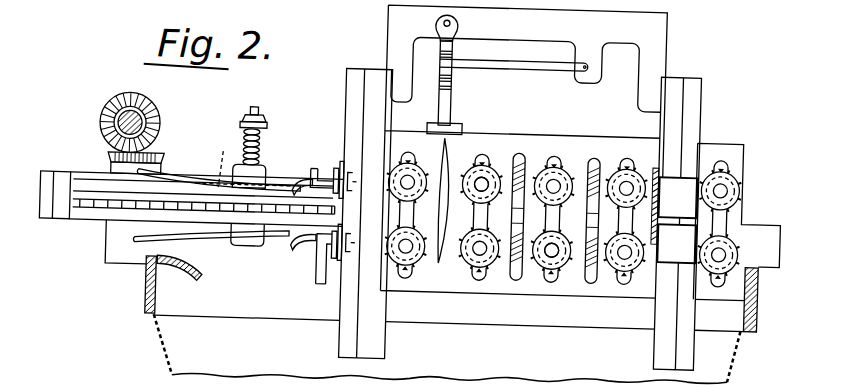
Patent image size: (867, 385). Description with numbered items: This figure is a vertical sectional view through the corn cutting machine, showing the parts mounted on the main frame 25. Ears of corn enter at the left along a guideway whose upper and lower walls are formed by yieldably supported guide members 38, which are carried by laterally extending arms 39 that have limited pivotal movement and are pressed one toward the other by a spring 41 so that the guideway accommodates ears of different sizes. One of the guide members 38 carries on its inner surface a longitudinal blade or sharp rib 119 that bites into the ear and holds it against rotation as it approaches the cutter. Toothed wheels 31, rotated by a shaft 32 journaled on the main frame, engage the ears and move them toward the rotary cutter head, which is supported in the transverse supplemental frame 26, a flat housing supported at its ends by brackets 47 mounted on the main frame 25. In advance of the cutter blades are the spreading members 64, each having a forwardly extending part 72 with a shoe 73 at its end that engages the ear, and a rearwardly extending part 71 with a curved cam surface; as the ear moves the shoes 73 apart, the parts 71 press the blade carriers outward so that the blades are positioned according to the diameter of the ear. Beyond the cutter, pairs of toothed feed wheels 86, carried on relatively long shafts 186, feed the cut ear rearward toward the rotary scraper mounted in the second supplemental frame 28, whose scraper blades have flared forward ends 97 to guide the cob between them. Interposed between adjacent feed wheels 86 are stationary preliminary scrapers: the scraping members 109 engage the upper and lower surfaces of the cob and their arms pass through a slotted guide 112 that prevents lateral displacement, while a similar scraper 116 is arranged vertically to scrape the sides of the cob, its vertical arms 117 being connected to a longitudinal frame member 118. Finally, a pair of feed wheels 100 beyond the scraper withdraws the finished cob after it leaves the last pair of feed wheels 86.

The main frame 25 is at (149, 300).
The supplemental frame 26 is at (384, 349).
The second supplemental frame 28 is at (697, 350).
The toothed wheels 31 is at (103, 218).
The shaft 32 is at (160, 112).
The guide members 38 is at (192, 179).
The arms 39 is at (262, 178).
The spring 41 is at (262, 146).
The brackets 47 is at (676, 243).
The spreading members 64 is at (335, 288).
The rearwardly extending part 71 is at (364, 216).
The forwardly extending part 72 is at (314, 170).
The shoe 73 is at (303, 181).
The toothed feed wheels 86 is at (415, 268).
The flared forward ends of scraper blades 97 is at (659, 209).
The feed wheels 100 is at (745, 178).
The scraping members 109 is at (519, 172).
The slotted guide 112 is at (592, 172).
The vertical stationary scraper 116 is at (452, 166).
The arms 117 is at (449, 97).
The longitudinal frame member 118 is at (403, 39).
The longitudinal blade 119 is at (243, 158).
The shafts 186 is at (483, 179).